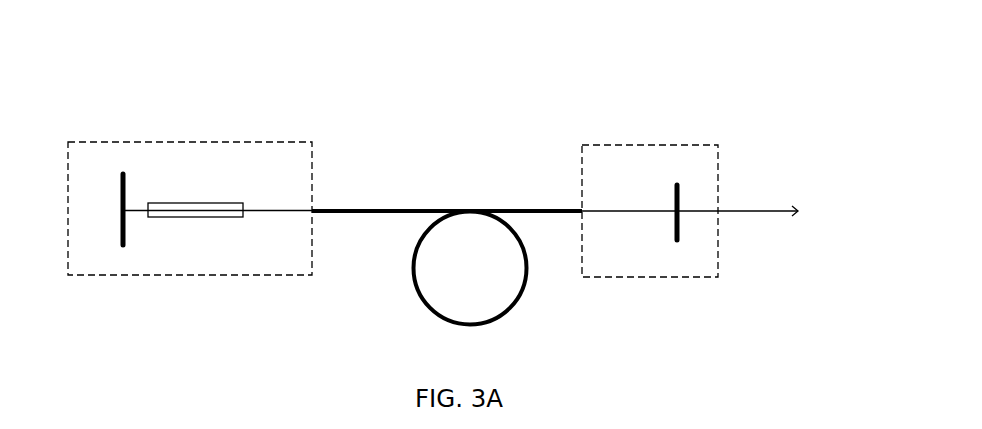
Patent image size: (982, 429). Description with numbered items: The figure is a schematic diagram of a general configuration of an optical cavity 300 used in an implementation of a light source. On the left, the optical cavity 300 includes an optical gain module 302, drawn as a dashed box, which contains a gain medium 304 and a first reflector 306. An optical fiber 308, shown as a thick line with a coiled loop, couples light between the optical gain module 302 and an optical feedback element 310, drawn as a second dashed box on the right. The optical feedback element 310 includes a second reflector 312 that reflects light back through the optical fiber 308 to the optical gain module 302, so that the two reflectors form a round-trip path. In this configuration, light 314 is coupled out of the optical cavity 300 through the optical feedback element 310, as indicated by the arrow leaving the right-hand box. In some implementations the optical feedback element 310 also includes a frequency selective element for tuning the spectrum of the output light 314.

The optical cavity 300 is at (446, 72).
The optical gain module 302 is at (197, 142).
The gain medium 304 is at (220, 216).
The first reflector 306 is at (117, 233).
The optical fiber 308 is at (383, 300).
The optical feedback element 310 is at (655, 143).
The second reflector 312 is at (682, 225).
The light 314 is at (770, 212).